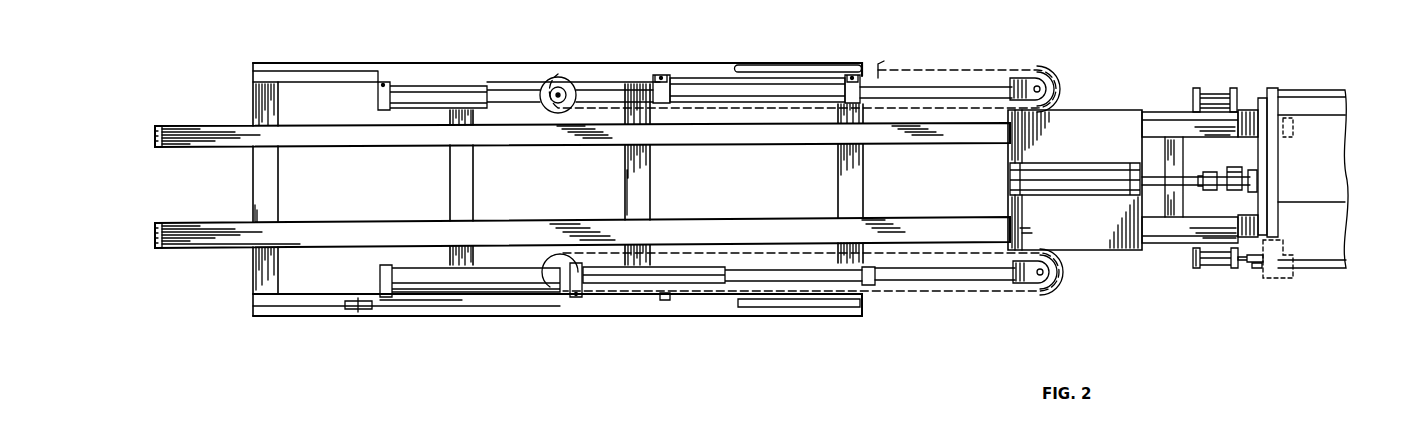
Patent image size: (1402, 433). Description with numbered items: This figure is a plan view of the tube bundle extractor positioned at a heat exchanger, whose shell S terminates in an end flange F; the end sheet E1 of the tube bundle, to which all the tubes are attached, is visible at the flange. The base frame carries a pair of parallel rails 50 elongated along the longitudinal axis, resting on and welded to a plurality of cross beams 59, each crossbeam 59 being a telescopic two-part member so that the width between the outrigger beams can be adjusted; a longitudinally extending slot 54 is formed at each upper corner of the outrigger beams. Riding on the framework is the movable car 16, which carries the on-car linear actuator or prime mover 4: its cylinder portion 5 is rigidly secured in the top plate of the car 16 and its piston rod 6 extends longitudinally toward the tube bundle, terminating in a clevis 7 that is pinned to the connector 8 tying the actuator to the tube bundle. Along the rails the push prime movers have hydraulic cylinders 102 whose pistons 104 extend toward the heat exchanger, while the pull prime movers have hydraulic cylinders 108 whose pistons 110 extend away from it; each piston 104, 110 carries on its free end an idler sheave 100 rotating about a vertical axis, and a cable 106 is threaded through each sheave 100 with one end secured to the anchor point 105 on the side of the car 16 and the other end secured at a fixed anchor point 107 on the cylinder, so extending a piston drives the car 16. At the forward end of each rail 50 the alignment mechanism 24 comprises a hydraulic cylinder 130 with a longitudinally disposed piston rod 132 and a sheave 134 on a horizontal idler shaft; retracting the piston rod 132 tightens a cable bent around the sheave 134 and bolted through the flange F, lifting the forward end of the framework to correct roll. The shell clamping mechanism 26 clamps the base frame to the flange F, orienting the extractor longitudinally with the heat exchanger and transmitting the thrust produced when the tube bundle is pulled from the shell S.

The longitudinally extending slot 54 is at (274, 63).
The rail 50 is at (185, 147).
The cross beam 59 is at (450, 181).
The hydraulic cylinder 102 is at (403, 88).
The idler sheave 100 is at (560, 78).
The piston 110 is at (607, 90).
The cable 106 is at (703, 253).
The fixed anchor point 107 is at (660, 75).
The hydraulic cylinder 108 is at (705, 80).
The anchor point 105 is at (1012, 92).
The telescopic piston 104 is at (935, 283).
The car 16 is at (1076, 84).
The cylinder portion 5 is at (1062, 163).
The prime mover 4 is at (1094, 158).
The piston rod 6 is at (1152, 182).
The connector 8 is at (1230, 159).
The clevis 7 is at (1216, 186).
The alignment mechanism 24 is at (1236, 78).
The hydraulic cylinder 130 is at (1193, 259).
The piston rod 132 is at (1247, 262).
The sheave 134 is at (1255, 266).
The clamping mechanism 26 is at (1288, 246).
The end sheet E1 is at (1262, 96).
The end flange F is at (1273, 88).
The shell S is at (1322, 90).